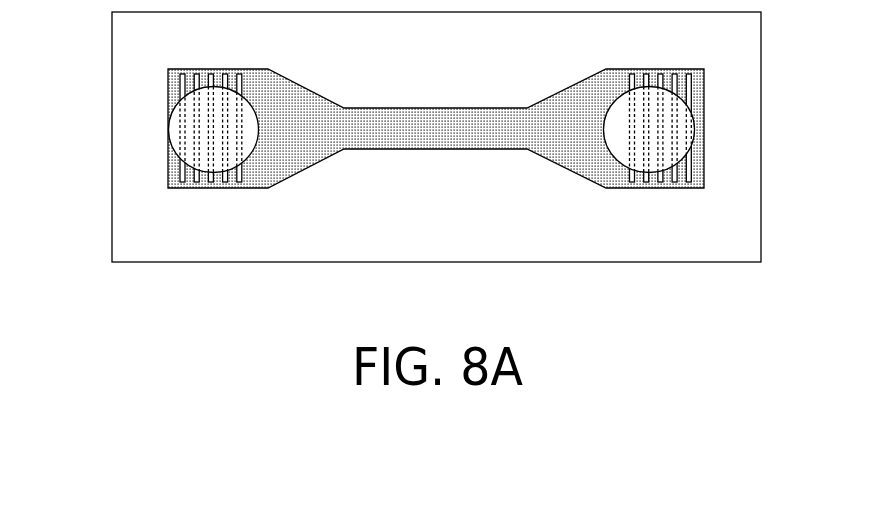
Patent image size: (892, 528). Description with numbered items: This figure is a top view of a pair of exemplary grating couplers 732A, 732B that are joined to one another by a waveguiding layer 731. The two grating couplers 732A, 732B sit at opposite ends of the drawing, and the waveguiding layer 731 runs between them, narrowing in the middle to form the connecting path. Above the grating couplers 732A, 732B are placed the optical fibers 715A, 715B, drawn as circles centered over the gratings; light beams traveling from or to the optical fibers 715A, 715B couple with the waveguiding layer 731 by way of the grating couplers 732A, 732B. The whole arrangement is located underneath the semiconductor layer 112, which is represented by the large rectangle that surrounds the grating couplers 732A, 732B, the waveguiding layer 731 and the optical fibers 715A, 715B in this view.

The semiconductor layer 112 is at (745, 223).
The waveguiding layer 731 is at (435, 140).
The grating coupler 732A is at (243, 186).
The grating coupler 732B is at (632, 188).
The optical fiber 715A is at (168, 152).
The optical fiber 715B is at (695, 135).